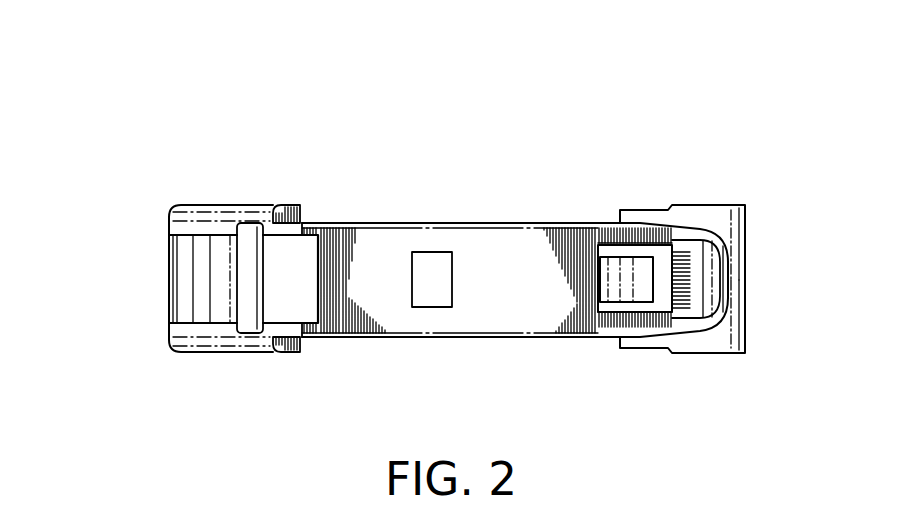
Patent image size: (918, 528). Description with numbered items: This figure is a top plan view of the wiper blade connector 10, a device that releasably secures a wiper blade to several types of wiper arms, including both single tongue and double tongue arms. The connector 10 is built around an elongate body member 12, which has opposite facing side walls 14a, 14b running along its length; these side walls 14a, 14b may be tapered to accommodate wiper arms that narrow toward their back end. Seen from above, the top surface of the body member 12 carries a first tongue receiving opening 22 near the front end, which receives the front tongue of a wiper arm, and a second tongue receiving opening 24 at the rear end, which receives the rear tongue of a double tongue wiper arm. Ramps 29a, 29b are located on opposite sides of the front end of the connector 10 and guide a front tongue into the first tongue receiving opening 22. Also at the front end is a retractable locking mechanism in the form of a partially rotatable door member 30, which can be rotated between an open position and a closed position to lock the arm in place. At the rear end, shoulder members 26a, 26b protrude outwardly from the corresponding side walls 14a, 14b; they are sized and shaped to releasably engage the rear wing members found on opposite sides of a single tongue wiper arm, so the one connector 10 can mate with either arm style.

The wiper blade connector 10 is at (342, 167).
The elongate body member 12 is at (488, 258).
The side wall 14a is at (548, 340).
The side wall 14b is at (542, 222).
The first tongue receiving opening 22 is at (283, 297).
The second tongue receiving opening 24 is at (665, 265).
The shoulder member 26a is at (635, 347).
The shoulder member 26b is at (650, 212).
The ramp 29a is at (294, 352).
The ramp 29b is at (290, 206).
The partially rotatable door member 30 is at (180, 278).